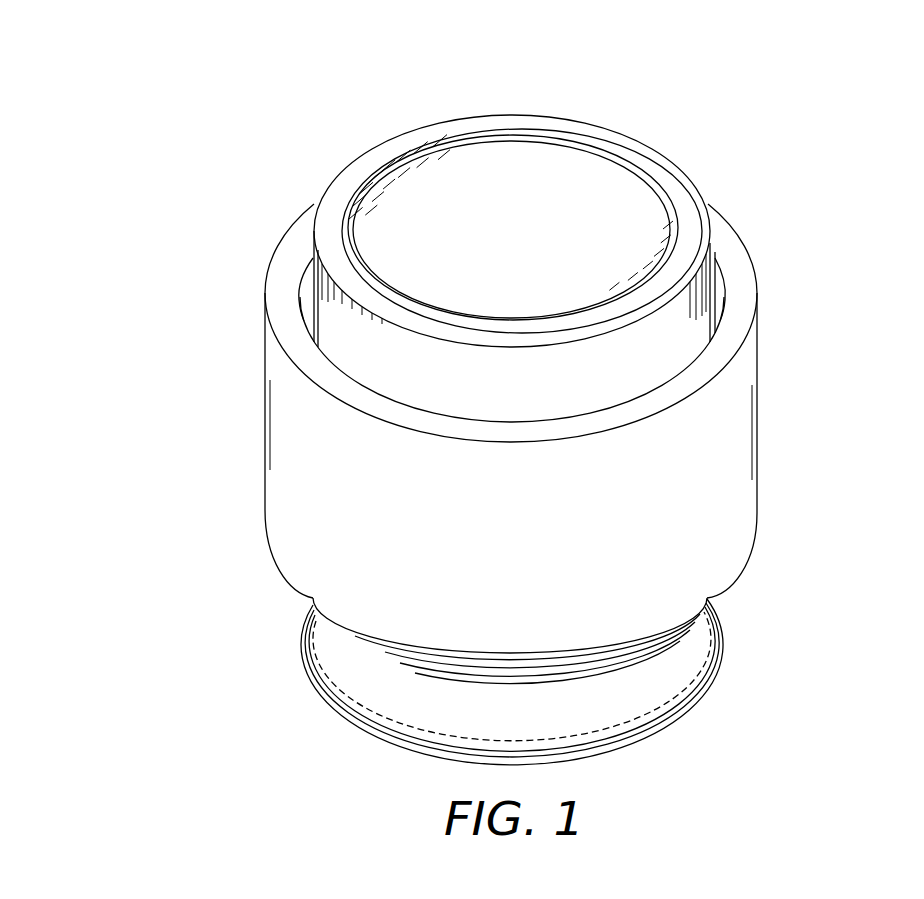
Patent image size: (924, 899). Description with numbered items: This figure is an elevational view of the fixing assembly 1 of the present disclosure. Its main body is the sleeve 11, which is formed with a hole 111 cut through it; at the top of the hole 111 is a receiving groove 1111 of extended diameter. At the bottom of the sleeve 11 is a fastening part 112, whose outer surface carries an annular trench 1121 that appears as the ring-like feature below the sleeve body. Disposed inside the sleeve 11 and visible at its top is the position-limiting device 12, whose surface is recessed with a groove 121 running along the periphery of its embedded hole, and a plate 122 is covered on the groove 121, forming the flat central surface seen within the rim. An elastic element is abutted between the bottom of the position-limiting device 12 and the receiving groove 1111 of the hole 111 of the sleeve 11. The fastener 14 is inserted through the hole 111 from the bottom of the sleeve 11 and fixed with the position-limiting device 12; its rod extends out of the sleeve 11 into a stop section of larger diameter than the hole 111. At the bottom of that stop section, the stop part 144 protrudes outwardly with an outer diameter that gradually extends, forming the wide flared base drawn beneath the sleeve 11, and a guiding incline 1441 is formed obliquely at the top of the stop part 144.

The fixing assembly 1 is at (609, 108).
The sleeve 11 is at (300, 445).
The hole 111 is at (130, 268).
The receiving groove 1111 is at (316, 308).
The fastening part 112 is at (228, 746).
The annular trench 1121 is at (447, 650).
The position-limiting device 12 is at (675, 327).
The groove 121 is at (675, 233).
The plate 122 is at (648, 207).
The fastener 14 is at (746, 650).
The stop part 144 is at (808, 716).
The guiding incline 1441 is at (668, 690).